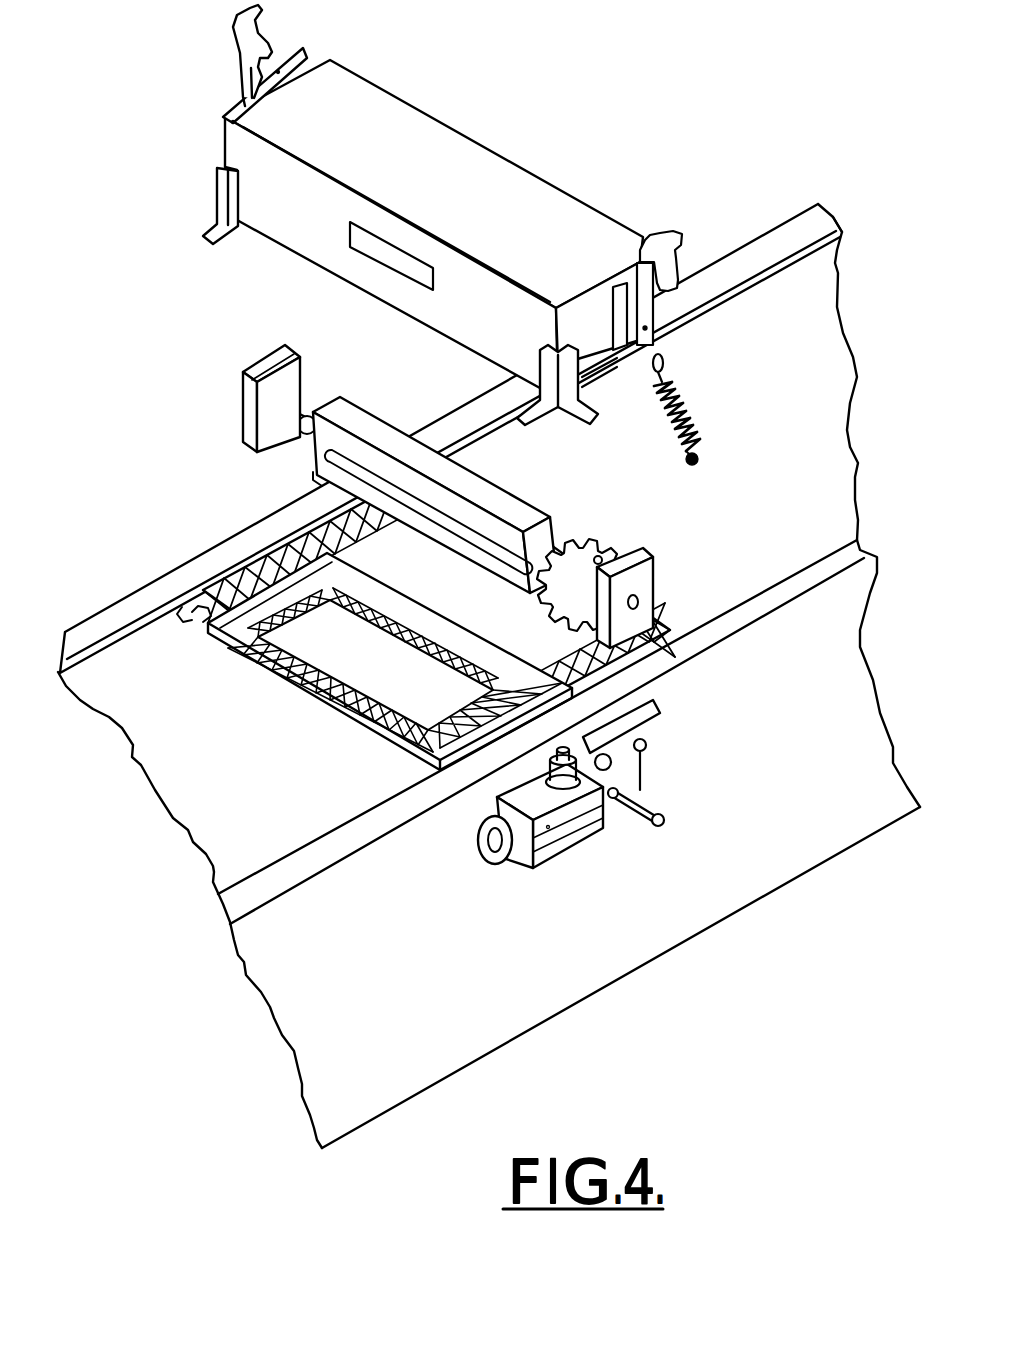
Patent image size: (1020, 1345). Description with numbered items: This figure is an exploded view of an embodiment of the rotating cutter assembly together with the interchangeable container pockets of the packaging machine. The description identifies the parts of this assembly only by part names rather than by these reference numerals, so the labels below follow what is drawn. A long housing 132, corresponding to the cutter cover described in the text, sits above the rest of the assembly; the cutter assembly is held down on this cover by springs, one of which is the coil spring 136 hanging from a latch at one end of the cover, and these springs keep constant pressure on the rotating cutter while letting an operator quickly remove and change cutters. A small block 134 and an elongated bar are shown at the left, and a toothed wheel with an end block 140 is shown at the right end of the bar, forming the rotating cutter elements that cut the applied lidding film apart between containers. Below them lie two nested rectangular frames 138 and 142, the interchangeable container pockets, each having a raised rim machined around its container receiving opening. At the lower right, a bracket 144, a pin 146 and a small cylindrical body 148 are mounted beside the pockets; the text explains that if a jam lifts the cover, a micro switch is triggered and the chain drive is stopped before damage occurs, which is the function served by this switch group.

The control housing 132 is at (460, 133).
The stop block 134 is at (253, 367).
The return spring 136 is at (690, 412).
The outer frame 138 is at (297, 532).
The drive gear block 140 is at (635, 548).
The inner frame 142 is at (330, 709).
The mounting bracket 144 is at (668, 711).
The pivot pin 146 is at (660, 815).
The actuating cylinder 148 is at (577, 846).